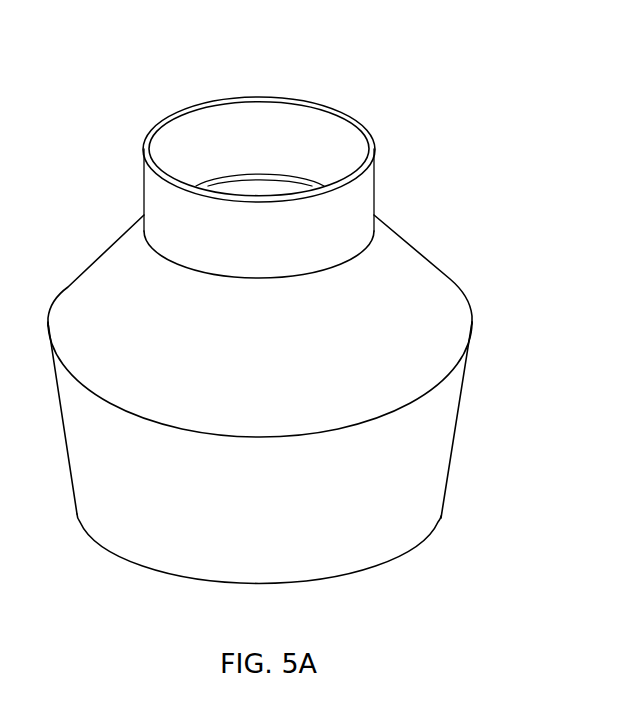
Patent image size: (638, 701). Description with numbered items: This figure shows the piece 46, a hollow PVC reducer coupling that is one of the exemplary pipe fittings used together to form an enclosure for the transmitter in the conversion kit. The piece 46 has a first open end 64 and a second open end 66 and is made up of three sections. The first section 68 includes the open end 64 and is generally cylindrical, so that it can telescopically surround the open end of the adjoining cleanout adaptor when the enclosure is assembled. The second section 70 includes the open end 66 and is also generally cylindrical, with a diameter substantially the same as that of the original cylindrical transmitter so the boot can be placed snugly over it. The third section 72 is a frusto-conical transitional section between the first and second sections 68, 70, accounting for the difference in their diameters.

The reducer coupling 46 is at (462, 426).
The first open end 64 is at (372, 573).
The second open end 66 is at (325, 132).
The first section 68 is at (447, 495).
The second section 70 is at (376, 178).
The third section 72 is at (435, 272).